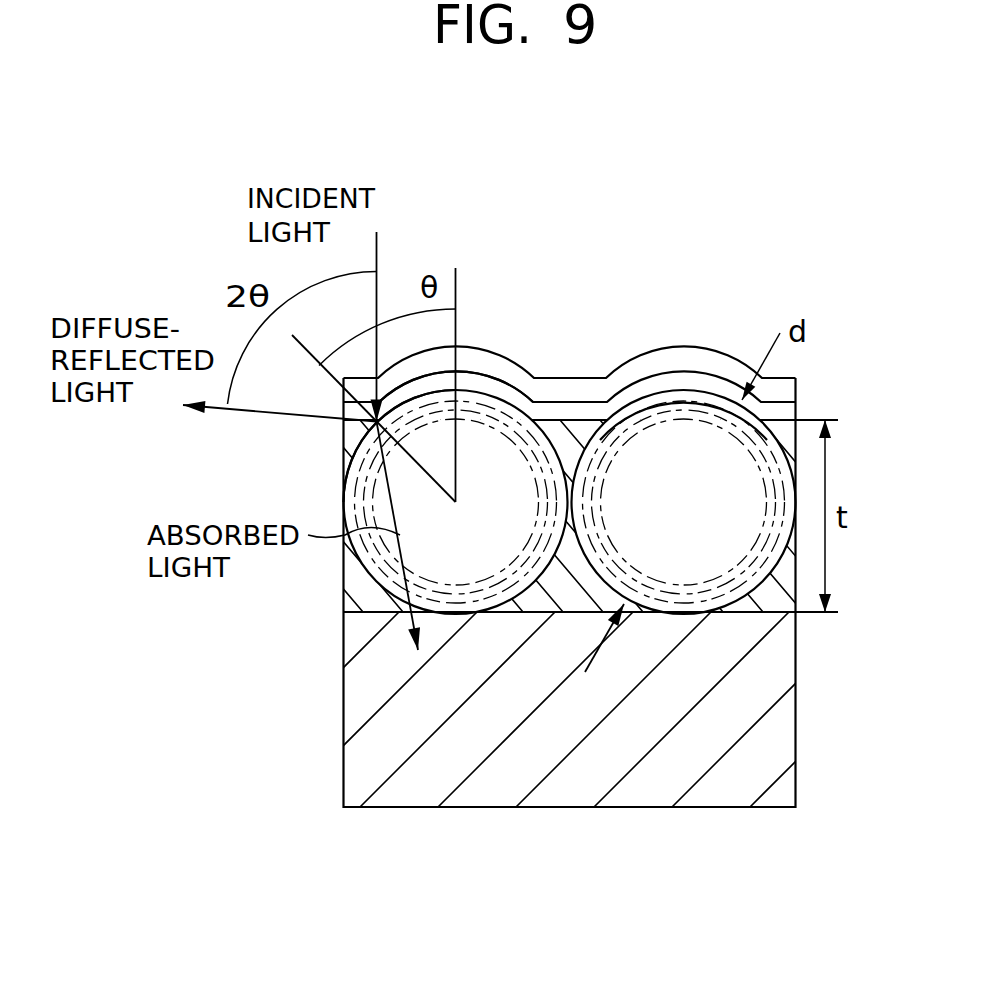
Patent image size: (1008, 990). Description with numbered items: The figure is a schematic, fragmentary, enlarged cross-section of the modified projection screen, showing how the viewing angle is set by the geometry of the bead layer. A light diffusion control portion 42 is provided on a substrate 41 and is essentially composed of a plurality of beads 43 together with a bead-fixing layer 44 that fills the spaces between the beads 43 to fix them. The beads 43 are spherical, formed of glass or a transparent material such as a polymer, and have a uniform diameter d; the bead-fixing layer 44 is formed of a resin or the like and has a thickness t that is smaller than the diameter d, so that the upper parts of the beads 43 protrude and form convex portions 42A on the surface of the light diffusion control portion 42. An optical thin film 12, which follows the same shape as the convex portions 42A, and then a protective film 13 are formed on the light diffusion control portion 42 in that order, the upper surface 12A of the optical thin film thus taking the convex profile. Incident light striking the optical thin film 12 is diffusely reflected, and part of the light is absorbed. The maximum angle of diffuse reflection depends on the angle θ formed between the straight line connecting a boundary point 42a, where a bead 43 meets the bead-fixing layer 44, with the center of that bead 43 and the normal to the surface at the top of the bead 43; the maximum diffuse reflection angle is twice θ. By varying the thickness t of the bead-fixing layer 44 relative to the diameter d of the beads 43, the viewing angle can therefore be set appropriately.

The substrate 41 is at (782, 732).
The light diffusion control portion 42 is at (742, 232).
The convex portions 42A is at (702, 380).
The boundary point 42a is at (372, 432).
The beads 43 is at (672, 410).
The bead-fixing layer 44 is at (570, 430).
The optical thin film 12 is at (797, 412).
The surface of lower layer 12A is at (497, 378).
The protective film 13 is at (797, 384).